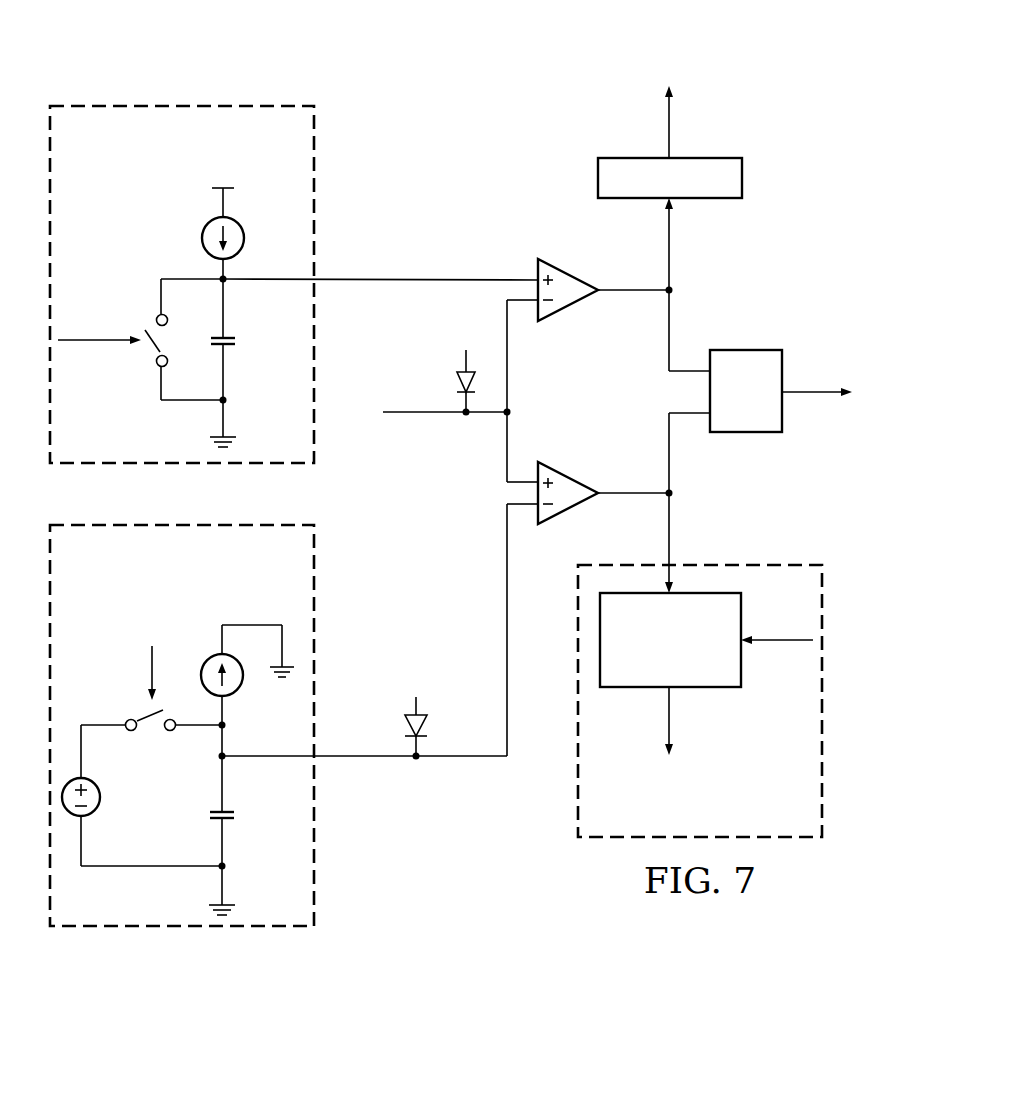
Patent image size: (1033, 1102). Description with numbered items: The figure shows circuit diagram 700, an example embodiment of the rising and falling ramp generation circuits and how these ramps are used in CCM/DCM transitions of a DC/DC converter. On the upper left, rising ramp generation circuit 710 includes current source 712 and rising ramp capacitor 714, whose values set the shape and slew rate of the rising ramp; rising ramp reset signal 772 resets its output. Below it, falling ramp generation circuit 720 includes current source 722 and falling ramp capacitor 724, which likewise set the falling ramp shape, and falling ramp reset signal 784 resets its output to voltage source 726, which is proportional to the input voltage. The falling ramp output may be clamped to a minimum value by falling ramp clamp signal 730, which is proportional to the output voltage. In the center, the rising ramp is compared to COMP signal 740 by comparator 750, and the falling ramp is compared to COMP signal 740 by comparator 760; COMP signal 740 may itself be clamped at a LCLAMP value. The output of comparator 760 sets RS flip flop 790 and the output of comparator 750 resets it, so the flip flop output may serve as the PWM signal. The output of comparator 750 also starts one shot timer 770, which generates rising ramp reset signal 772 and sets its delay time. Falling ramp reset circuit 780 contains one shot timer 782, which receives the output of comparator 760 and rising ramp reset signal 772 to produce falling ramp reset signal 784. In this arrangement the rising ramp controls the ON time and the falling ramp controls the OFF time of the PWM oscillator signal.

The circuit diagram 700 is at (622, 52).
The rising ramp generation circuit 710 is at (156, 102).
The current source 712 is at (202, 238).
The rising ramp capacitor 714 is at (237, 342).
The falling ramp generation circuit 720 is at (154, 940).
The current source 722 is at (203, 655).
The falling ramp capacitor 724 is at (235, 814).
The voltage source 726 is at (100, 800).
The falling ramp clamp signal 730 is at (408, 640).
The COMP signal 740 is at (430, 319).
The comparator 750 is at (568, 274).
The comparator 760 is at (570, 512).
The one shot timer 770 is at (743, 178).
The rising ramp reset signal 772 is at (672, 128).
The falling ramp reset circuit 780 is at (777, 848).
The one shot timer 782 is at (741, 666).
The falling ramp reset signal 784 is at (670, 716).
The RS flip flop 790 is at (747, 350).